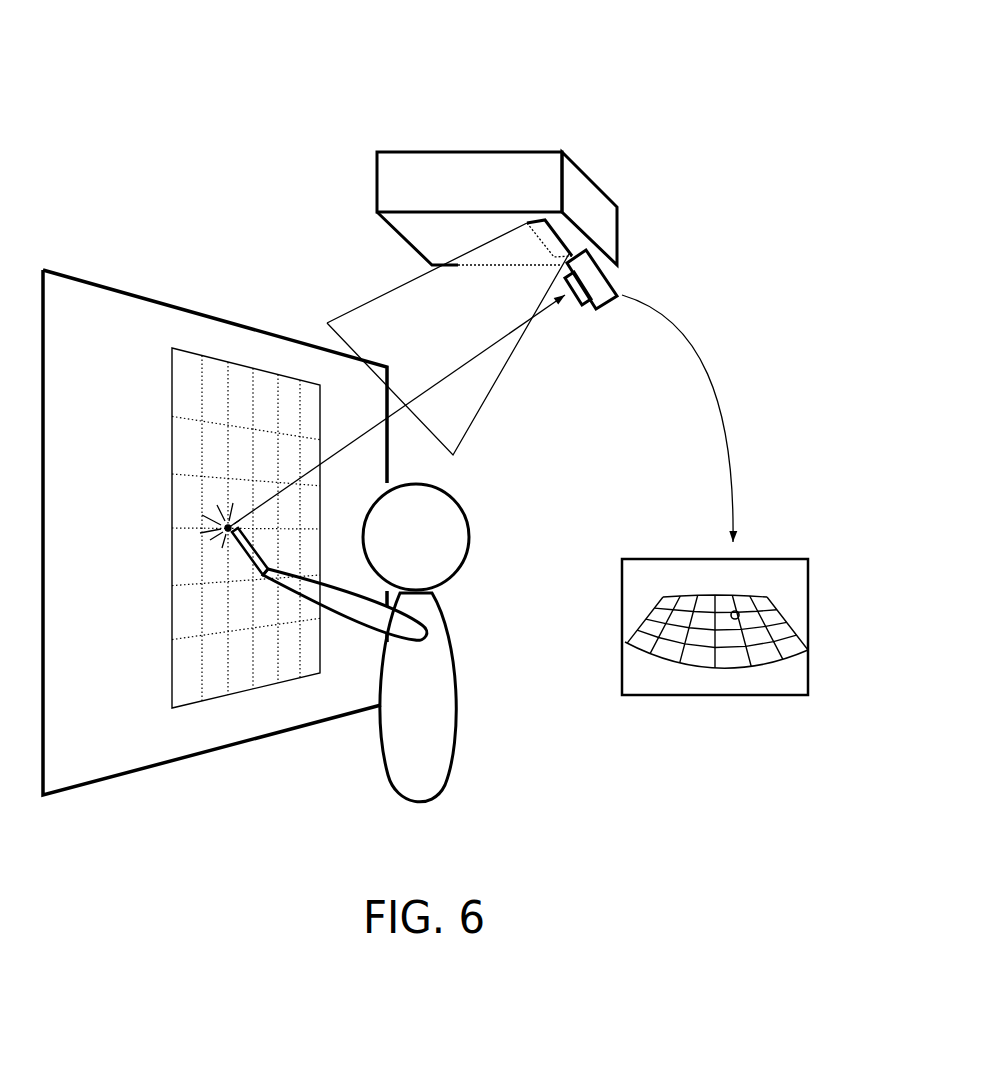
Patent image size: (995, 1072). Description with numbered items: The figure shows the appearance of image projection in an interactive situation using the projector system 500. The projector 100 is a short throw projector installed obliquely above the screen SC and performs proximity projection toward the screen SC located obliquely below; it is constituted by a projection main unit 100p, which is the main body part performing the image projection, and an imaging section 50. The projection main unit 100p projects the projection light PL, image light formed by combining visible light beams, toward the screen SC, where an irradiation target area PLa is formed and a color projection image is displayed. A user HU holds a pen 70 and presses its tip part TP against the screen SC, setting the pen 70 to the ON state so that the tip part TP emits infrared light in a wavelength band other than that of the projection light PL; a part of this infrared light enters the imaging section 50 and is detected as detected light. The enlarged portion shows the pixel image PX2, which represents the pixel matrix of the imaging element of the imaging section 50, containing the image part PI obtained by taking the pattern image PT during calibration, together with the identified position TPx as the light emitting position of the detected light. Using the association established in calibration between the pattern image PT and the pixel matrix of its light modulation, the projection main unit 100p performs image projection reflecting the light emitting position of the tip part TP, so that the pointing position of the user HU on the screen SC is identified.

The projector system 500 is at (386, 76).
The projector 100 is at (472, 139).
The projection main unit 100p is at (533, 165).
The imaging section 50 is at (602, 285).
The screen SC is at (138, 313).
The irradiation target area PLa is at (213, 365).
The pattern image PT is at (257, 672).
The projection light PL is at (492, 372).
The tip part TP is at (227, 535).
The pen 70 is at (252, 557).
The user HU is at (440, 672).
The pixel image PX2 is at (645, 673).
The image part PI is at (702, 653).
The identified position TPx is at (737, 622).